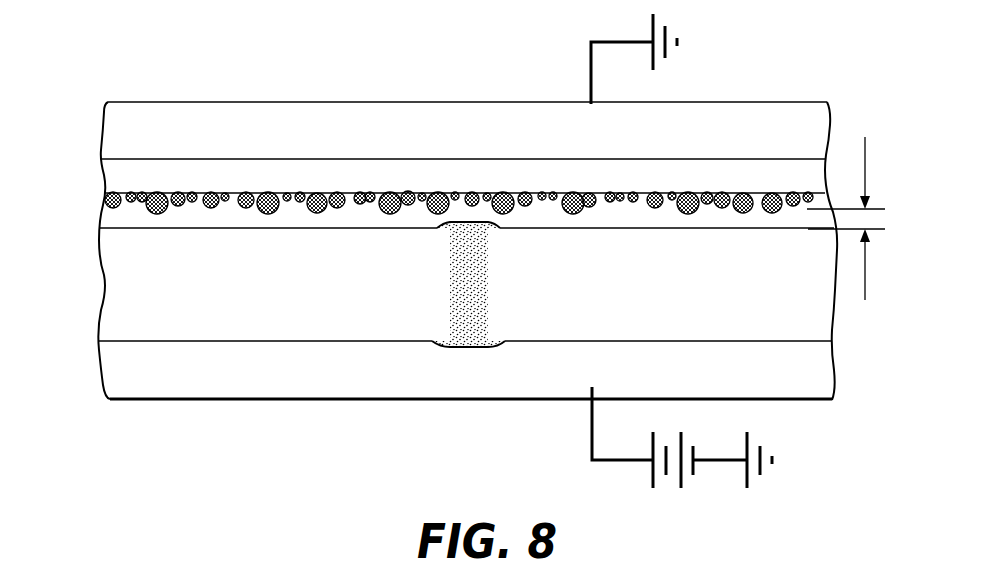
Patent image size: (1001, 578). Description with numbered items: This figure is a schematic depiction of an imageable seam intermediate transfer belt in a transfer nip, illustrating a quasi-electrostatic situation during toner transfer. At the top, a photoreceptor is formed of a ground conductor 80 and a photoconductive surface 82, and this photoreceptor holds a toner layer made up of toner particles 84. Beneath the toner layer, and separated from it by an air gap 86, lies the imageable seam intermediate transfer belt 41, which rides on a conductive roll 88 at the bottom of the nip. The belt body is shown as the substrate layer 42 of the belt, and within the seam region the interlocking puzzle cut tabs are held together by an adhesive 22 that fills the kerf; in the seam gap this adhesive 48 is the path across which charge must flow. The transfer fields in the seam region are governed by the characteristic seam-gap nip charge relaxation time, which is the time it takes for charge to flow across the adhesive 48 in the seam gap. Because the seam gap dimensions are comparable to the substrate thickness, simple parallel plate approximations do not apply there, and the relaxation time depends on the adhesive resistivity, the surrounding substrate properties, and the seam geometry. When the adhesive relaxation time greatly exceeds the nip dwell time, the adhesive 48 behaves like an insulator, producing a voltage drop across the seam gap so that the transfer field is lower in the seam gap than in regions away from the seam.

The ground conductor 80 is at (332, 112).
The photoconductive surface 82 is at (106, 169).
The toner particles 84 is at (106, 199).
The air gap 86 is at (846, 204).
The imageable seam intermediate transfer belt 41 is at (90, 252).
The dielectric layer 42 is at (110, 299).
The adhesive 48 is at (480, 293).
The adhesive 22 is at (434, 358).
The conductive roll 88 is at (325, 383).